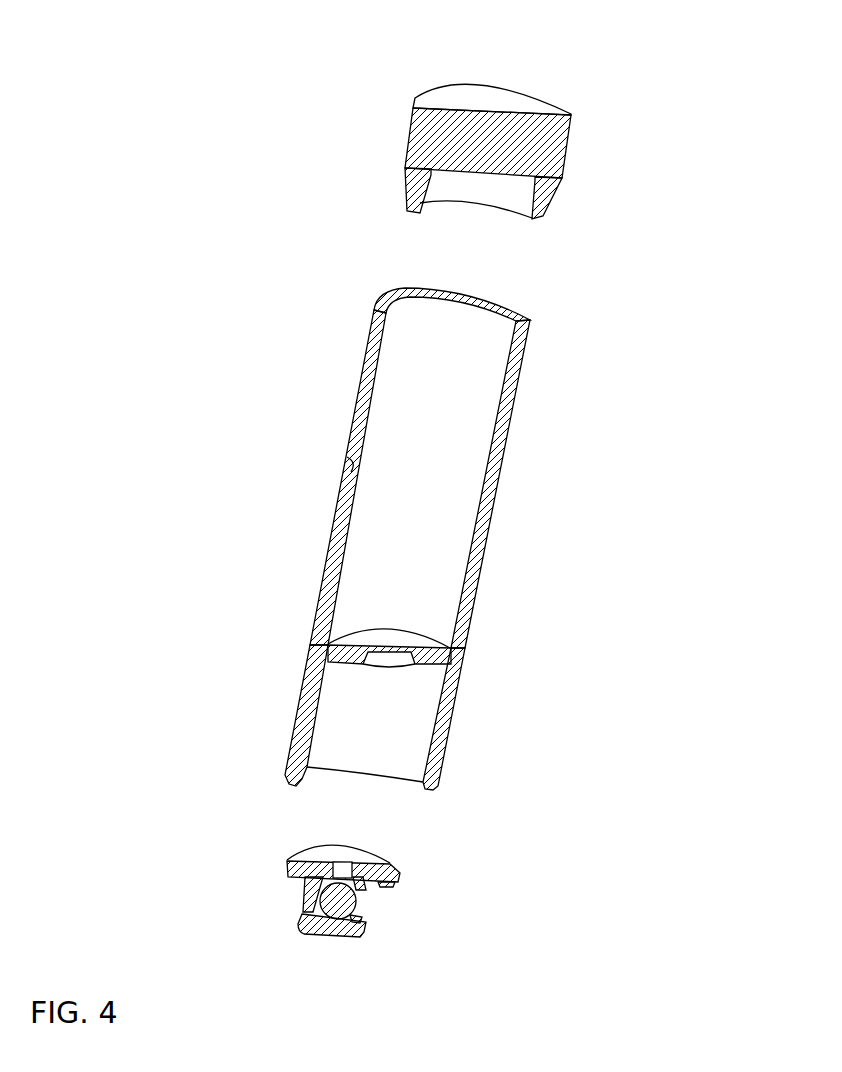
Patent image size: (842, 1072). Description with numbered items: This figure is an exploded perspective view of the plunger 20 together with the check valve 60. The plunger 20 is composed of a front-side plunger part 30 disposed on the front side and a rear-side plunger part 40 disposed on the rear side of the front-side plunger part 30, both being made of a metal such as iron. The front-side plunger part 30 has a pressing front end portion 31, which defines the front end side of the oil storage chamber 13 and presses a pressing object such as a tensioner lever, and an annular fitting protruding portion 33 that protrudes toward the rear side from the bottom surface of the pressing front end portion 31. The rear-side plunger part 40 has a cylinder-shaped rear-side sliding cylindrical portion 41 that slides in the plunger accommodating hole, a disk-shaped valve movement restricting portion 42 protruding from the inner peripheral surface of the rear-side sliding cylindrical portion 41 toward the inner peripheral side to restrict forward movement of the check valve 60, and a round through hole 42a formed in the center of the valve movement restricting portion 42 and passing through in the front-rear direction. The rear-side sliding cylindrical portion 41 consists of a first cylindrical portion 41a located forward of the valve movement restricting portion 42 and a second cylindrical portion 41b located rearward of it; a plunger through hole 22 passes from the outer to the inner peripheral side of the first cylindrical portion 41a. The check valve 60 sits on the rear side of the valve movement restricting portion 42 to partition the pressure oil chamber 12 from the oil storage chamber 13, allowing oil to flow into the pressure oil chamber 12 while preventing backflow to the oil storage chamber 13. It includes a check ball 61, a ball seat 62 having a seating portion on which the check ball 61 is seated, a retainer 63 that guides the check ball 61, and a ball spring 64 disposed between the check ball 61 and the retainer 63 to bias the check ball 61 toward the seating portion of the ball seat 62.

The plunger 20 is at (209, 148).
The front-side plunger part 30 is at (389, 110).
The pressing front end portion 31 is at (523, 142).
The annular fitting protruding portion 33 is at (548, 197).
The rear-side plunger part 40 is at (337, 320).
The rear-side sliding cylindrical portion 41 is at (598, 582).
The first cylindrical portion 41a is at (482, 575).
The second cylindrical portion 41b is at (457, 697).
The valve movement restricting portion 42 is at (325, 628).
The through hole 42a is at (387, 647).
The plunger through hole 22 is at (352, 465).
The oil storage chamber 13 is at (434, 498).
The pressure oil chamber 12 is at (387, 730).
The check valve 60 is at (255, 879).
The check ball 61 is at (358, 905).
The ball seat 62 is at (390, 863).
The retainer 63 is at (348, 933).
The ball spring 64 is at (367, 923).